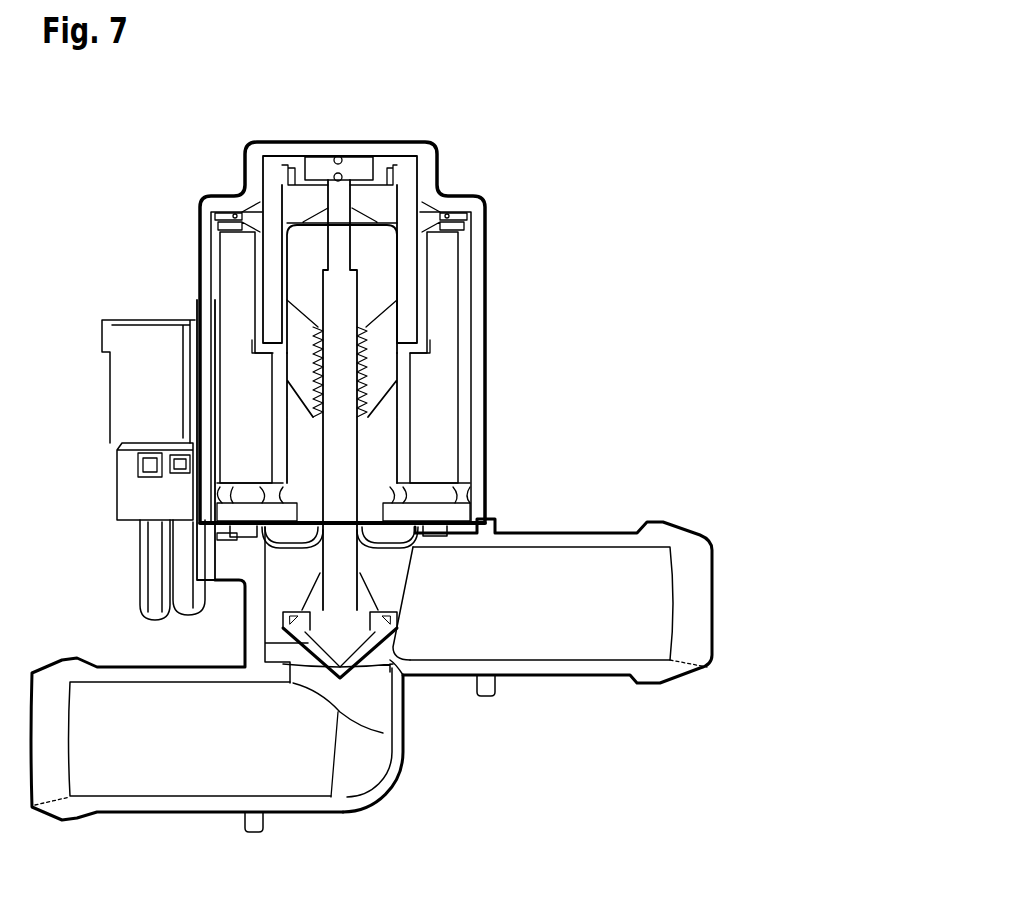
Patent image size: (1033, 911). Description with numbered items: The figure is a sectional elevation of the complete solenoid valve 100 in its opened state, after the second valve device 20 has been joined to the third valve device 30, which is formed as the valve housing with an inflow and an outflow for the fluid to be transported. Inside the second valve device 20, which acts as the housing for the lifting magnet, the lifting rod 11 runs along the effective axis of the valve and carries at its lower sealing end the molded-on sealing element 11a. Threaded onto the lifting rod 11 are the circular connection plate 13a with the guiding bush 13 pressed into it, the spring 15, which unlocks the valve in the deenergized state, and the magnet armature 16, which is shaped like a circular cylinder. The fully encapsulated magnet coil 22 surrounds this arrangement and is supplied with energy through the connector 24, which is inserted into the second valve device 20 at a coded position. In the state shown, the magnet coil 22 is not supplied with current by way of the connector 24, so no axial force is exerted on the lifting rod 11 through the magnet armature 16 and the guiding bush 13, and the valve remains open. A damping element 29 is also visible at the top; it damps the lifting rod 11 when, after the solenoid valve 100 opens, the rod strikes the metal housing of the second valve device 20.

The lifting rod 11 is at (335, 276).
The sealing element 11a is at (378, 632).
The guiding bush 13 is at (382, 444).
The connection plate 13a is at (450, 513).
The spring 15 is at (383, 363).
The magnet armature 16 is at (380, 258).
The second valve device 20 is at (478, 297).
The magnet coil 22 is at (437, 402).
The connector 24 is at (160, 582).
The damping element 29 is at (355, 167).
The third valve device 30 is at (375, 792).
The solenoid valve 100 is at (548, 831).